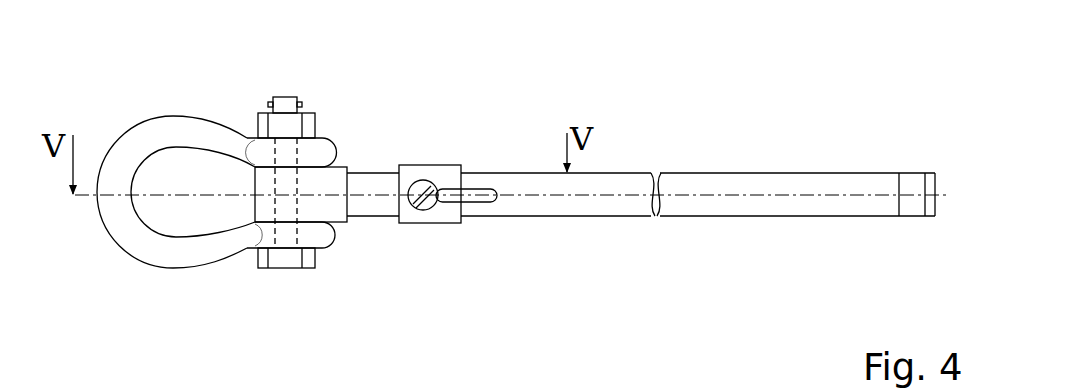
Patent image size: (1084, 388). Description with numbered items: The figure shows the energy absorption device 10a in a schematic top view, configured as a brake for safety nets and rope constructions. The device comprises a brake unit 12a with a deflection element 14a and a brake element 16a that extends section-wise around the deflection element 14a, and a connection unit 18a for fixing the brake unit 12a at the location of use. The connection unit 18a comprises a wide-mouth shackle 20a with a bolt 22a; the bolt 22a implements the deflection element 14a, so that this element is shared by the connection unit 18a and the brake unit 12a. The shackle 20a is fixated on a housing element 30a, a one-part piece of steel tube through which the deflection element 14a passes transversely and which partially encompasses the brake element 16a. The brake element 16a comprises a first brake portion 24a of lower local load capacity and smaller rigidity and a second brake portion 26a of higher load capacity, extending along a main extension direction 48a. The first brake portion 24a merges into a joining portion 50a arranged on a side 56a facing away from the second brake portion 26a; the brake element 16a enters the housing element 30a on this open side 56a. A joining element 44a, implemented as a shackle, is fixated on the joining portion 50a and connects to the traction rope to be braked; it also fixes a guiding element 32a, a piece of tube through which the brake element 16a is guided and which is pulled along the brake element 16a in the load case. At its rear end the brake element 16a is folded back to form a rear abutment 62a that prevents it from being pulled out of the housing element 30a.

The energy absorption device 10a is at (493, 97).
The brake unit 12a is at (372, 219).
The deflection element 14a is at (272, 187).
The brake element 16a is at (627, 188).
The connection unit 18a is at (152, 272).
The shackle 20a is at (168, 130).
The bolt 22a is at (286, 182).
The first brake portion 24a is at (390, 246).
The second brake portion 26a is at (578, 219).
The housing element 30a is at (337, 180).
The guiding element 32a is at (440, 172).
The joining element 44a is at (485, 188).
The main extension direction 48a is at (816, 147).
The joining portion 50a is at (373, 171).
The side 56a is at (352, 195).
The rear abutment 62a is at (907, 162).